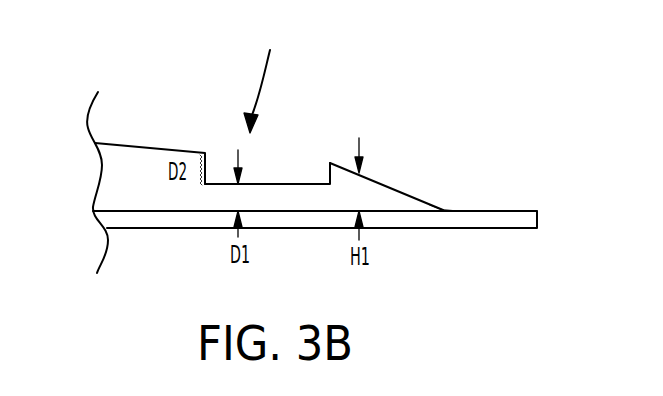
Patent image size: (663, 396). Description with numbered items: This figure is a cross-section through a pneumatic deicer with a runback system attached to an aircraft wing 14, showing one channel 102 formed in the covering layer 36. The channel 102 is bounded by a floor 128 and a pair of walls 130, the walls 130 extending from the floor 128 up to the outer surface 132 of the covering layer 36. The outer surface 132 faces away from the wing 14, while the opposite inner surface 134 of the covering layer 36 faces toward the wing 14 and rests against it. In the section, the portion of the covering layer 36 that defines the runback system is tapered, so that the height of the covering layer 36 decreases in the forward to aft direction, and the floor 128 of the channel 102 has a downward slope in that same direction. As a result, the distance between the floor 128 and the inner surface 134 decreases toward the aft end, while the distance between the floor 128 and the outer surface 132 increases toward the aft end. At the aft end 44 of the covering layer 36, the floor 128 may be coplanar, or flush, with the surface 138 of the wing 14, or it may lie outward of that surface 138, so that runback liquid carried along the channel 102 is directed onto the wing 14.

The wing 14 is at (520, 220).
The covering layer 36 is at (138, 157).
The aft end of covering layer 44 is at (445, 210).
The channel 102 is at (263, 79).
The floor 128 is at (290, 184).
The walls 130 is at (210, 163).
The outer surface 132 is at (388, 184).
The inner surface 134 is at (325, 211).
The surface of wing 138 is at (482, 210).